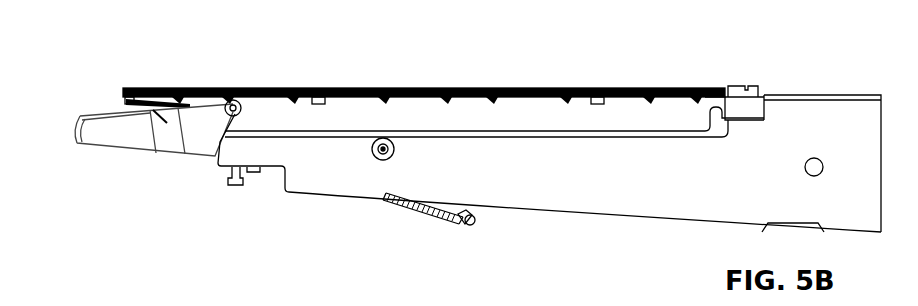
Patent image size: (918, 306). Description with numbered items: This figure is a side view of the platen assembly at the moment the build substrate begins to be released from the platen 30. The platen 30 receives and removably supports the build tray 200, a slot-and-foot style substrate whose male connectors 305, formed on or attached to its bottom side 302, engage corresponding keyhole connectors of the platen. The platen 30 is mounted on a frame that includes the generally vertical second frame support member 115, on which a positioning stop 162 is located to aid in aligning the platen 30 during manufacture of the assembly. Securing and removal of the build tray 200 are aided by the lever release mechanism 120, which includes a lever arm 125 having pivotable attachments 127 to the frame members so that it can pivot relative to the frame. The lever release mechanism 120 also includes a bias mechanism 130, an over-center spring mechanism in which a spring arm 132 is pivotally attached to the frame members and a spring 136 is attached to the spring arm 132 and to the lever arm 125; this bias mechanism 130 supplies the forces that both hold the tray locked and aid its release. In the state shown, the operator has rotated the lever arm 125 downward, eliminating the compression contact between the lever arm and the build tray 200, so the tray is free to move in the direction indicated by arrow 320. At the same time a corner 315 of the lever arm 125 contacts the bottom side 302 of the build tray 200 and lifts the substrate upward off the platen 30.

The lever release mechanism 120 is at (126, 62).
The lever arm 125 is at (100, 130).
The pivotable attachments 127 is at (237, 97).
The corner 315 is at (173, 100).
The build tray 200 is at (352, 90).
The male connectors 305 is at (553, 100).
The arrow 320 is at (437, 53).
The positioning stop 162 is at (742, 87).
The platen 30 is at (670, 113).
The bottom side 302 is at (440, 98).
The bias mechanism 130 is at (284, 240).
The second frame support member 115 is at (608, 212).
The spring 136 is at (422, 213).
The spring arm 132 is at (480, 213).